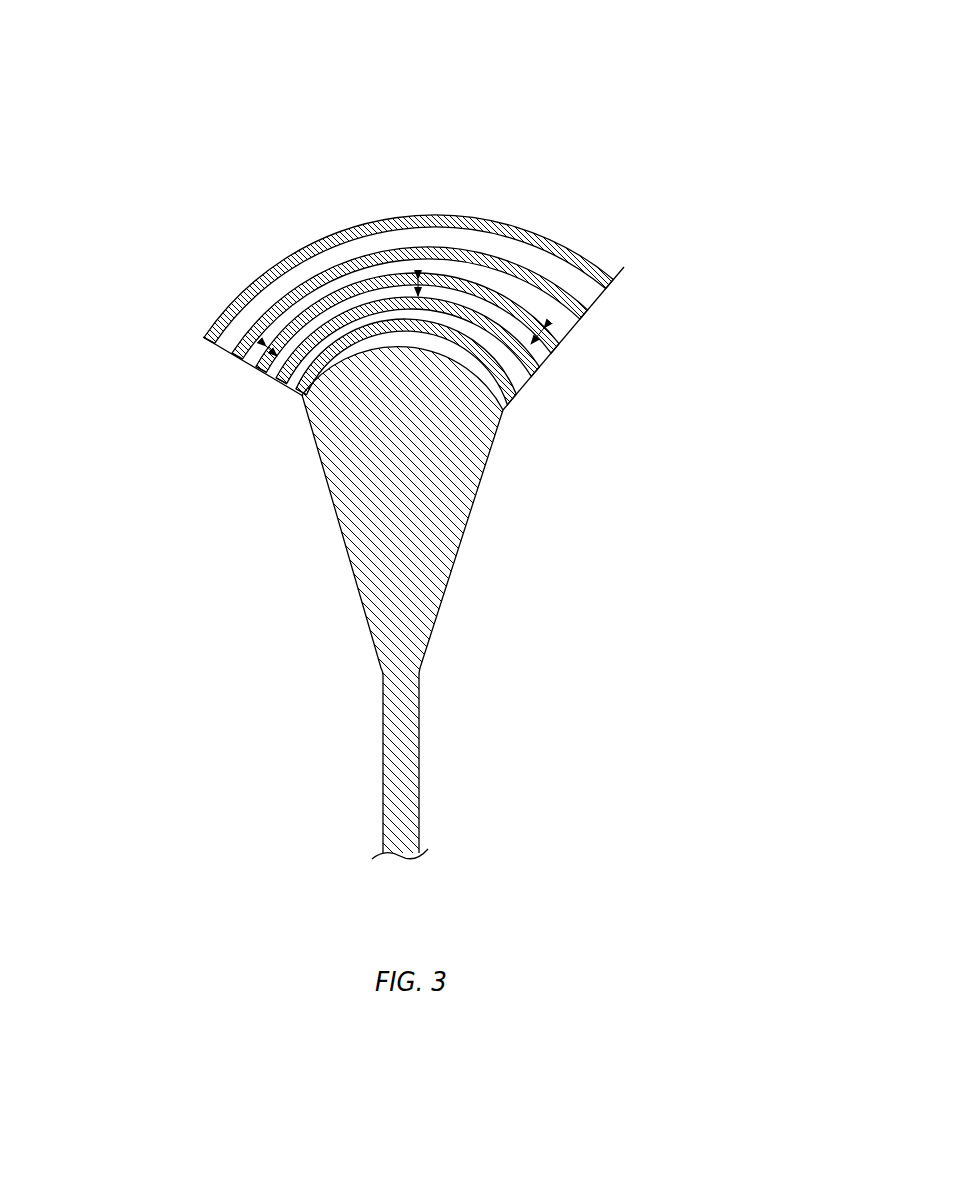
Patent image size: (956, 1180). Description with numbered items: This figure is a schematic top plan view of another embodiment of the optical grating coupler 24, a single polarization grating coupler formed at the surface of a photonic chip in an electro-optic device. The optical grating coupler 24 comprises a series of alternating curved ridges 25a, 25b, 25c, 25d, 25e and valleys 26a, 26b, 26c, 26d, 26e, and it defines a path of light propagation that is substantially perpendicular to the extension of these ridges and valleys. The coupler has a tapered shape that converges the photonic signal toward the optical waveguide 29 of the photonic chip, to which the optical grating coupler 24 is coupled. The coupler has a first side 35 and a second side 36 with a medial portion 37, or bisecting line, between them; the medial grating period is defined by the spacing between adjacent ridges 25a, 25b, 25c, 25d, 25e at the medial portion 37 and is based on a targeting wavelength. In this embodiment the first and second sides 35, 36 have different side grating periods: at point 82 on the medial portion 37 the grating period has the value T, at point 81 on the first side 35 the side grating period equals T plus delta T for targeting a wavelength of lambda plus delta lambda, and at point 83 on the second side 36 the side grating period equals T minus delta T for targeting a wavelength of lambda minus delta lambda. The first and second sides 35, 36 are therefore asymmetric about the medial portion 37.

The optical grating coupler 24 is at (688, 82).
The optical waveguide 29 is at (410, 782).
The curved ridge 25a is at (617, 283).
The curved ridge 25b is at (586, 314).
The curved ridge 25c is at (561, 346).
The curved ridge 25d is at (538, 368).
The fifth layer 25e is at (518, 394).
The valley 26a is at (230, 351).
The valley 26b is at (240, 362).
The valley 26c is at (262, 376).
The fourth layer end 26d is at (282, 392).
The fifth layer end 26e is at (302, 404).
The first side 35 is at (605, 303).
The second side 36 is at (215, 346).
The medial portion 37 is at (395, 267).
The point 81 is at (542, 326).
The point 82 is at (420, 276).
The point 83 is at (268, 340).